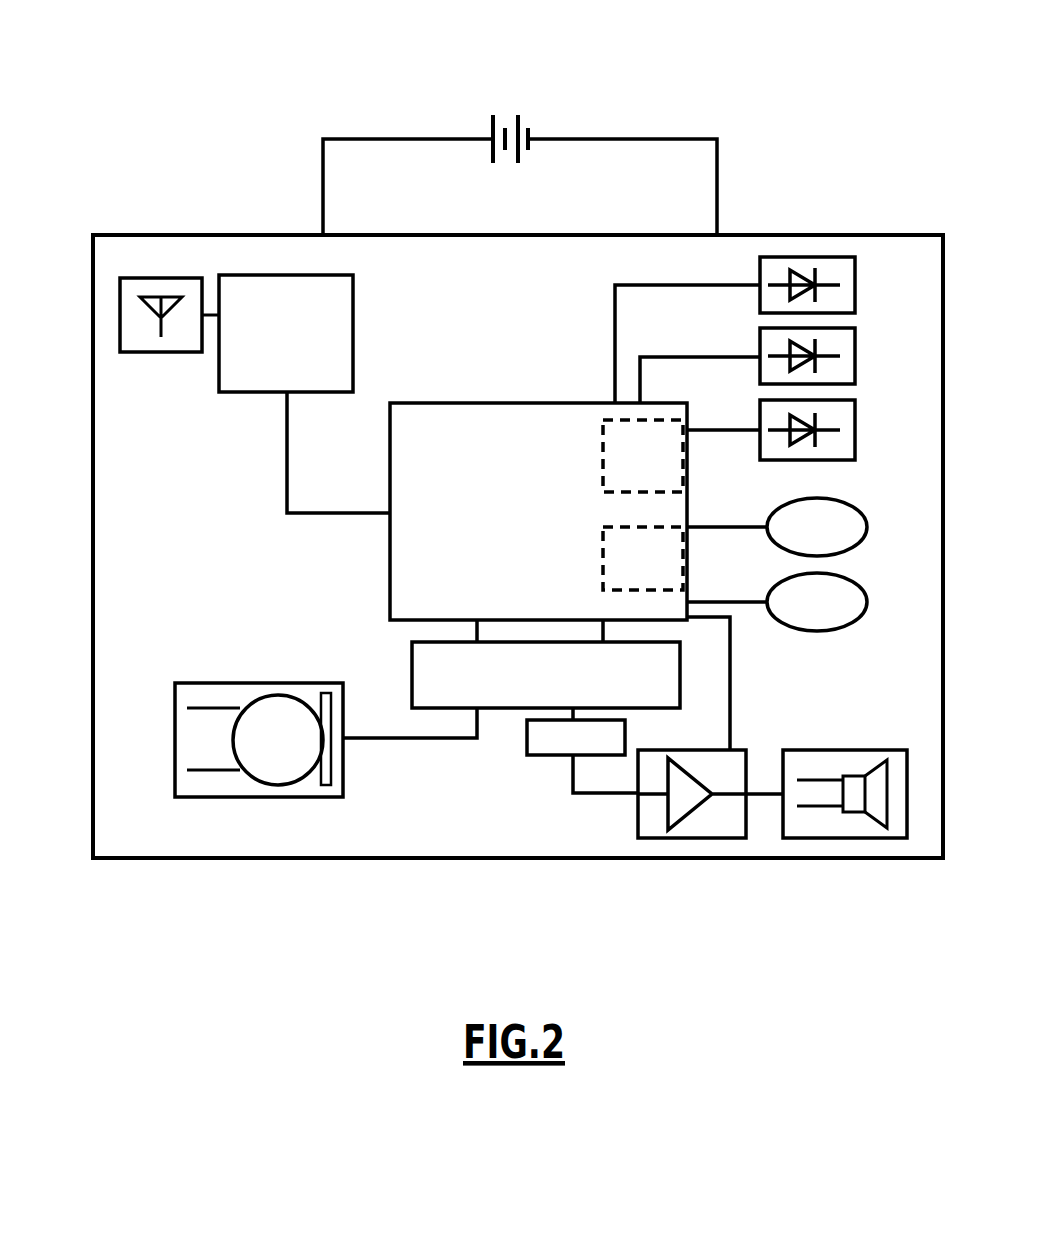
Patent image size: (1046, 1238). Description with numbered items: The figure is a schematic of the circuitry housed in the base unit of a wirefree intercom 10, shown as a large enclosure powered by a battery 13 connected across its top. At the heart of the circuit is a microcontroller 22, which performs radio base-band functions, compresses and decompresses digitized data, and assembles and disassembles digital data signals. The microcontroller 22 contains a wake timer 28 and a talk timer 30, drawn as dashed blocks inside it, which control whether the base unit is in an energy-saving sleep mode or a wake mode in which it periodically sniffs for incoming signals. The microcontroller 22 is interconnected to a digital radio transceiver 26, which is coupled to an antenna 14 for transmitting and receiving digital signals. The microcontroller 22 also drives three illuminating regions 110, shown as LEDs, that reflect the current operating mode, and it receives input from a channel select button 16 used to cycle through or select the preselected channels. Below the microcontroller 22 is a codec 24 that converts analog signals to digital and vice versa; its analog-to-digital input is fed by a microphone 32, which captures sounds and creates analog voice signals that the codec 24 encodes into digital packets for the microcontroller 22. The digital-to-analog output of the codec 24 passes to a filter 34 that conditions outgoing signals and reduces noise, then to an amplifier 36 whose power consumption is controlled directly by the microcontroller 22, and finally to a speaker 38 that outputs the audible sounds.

The wirefree intercom 10 is at (210, 148).
The battery 13 is at (527, 122).
The antenna 14 is at (120, 312).
The channel select button 16 is at (817, 564).
The microcontroller 22 is at (578, 517).
The codec 24 is at (511, 690).
The digital radio transceiver 26 is at (304, 394).
The wake timer 28 is at (643, 456).
The talk timer 30 is at (643, 558).
The microphone 32 is at (259, 740).
The filter 34 is at (545, 757).
The amplifier 36 is at (700, 838).
The speaker 38 is at (858, 838).
The illuminating regions 110 is at (832, 257).